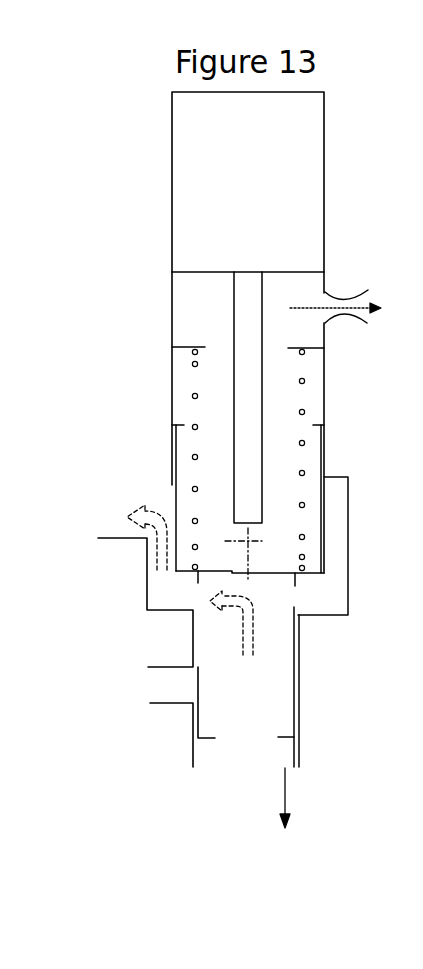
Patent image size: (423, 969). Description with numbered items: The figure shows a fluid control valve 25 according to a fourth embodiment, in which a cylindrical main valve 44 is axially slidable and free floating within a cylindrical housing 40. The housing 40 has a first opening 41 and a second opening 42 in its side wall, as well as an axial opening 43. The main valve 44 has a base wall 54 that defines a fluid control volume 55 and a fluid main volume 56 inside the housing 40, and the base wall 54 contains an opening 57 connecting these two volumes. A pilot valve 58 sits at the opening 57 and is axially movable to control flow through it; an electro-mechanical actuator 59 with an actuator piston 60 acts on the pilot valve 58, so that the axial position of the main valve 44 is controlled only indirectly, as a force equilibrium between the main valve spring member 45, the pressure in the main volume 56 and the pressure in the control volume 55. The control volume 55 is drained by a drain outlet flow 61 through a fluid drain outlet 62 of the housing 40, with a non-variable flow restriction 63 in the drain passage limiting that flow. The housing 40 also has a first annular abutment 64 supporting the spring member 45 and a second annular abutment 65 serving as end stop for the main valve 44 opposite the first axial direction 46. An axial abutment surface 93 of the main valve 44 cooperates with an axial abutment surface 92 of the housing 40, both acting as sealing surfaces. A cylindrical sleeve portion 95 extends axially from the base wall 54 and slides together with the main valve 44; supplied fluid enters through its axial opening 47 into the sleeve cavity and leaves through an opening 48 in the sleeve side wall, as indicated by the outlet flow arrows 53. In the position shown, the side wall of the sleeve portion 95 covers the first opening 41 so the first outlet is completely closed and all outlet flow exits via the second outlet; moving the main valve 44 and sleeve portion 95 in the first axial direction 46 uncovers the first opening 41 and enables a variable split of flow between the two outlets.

The fluid control valve 25 is at (157, 104).
The electro-mechanical actuator 59 is at (218, 180).
The cylindrical housing 40 is at (172, 272).
The actuator piston 60 is at (248, 310).
The first annular abutment 64 is at (183, 347).
The main valve spring member 45 is at (304, 380).
The base wall opening 57 is at (172, 485).
The second annular abutment 65 is at (315, 423).
The fluid control volume 55 is at (277, 430).
The main valve 44 is at (325, 494).
The base wall 54 is at (311, 570).
The pilot valve 58 is at (255, 575).
The axial abutment surface of the main valve 93 is at (299, 578).
The opening in the sleeve side wall 48 is at (97, 562).
The fluid main volume 56 is at (265, 667).
The cylindrical sleeve portion 95 is at (198, 687).
The first axial direction 46 is at (285, 795).
The second opening 42 is at (130, 512).
The outlet flow arrows 53 is at (163, 532).
The axial abutment surface of the housing 92 is at (185, 610).
The first opening 41 is at (157, 677).
The axial opening of the sleeve portion 47 is at (257, 735).
The axial opening 43 is at (262, 757).
The drain outlet flow 61 is at (323, 306).
The non-variable flow restriction 63 is at (347, 297).
The fluid drain outlet 62 is at (373, 293).